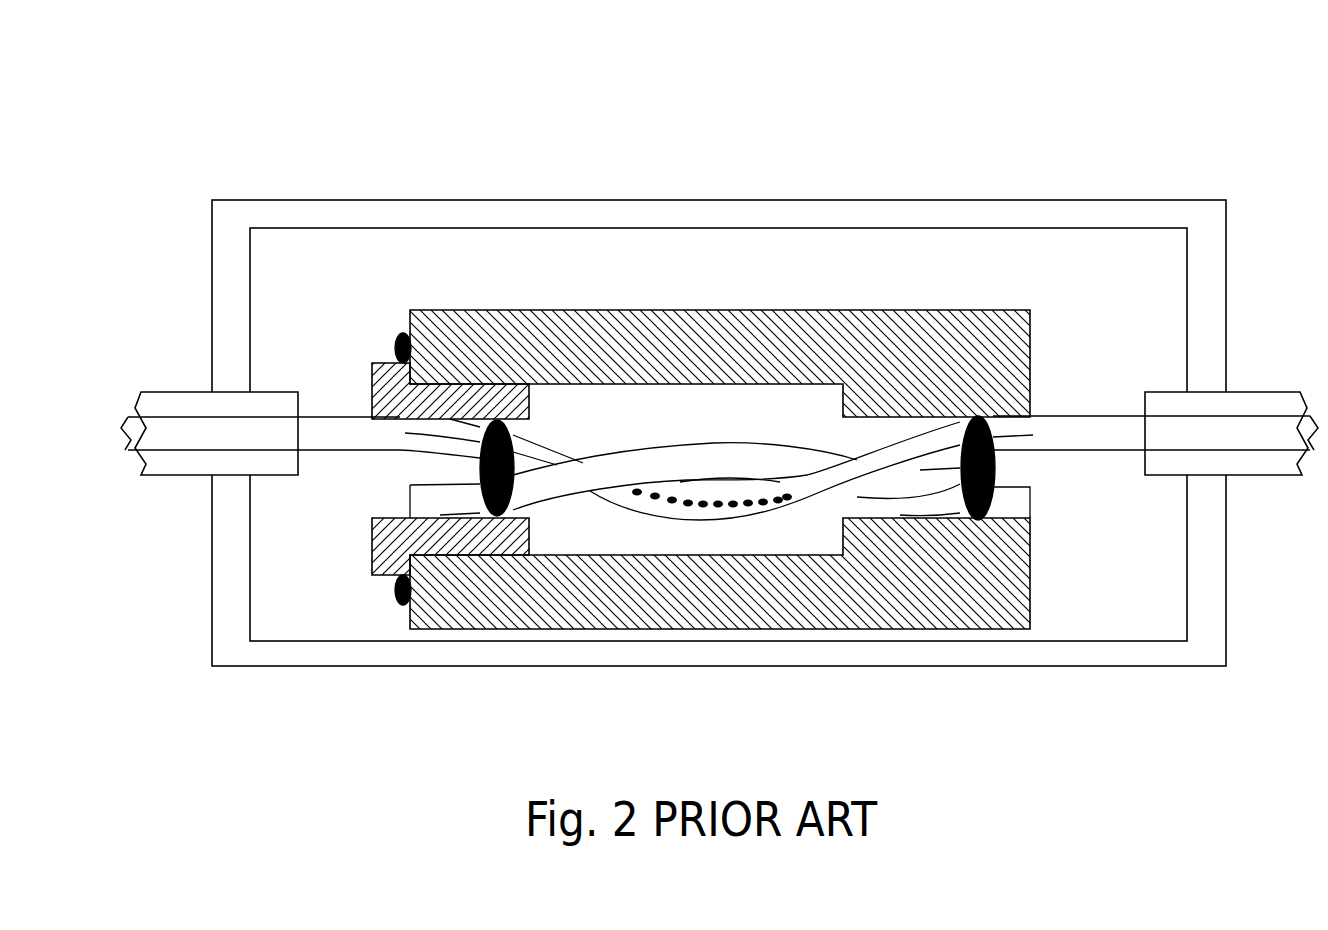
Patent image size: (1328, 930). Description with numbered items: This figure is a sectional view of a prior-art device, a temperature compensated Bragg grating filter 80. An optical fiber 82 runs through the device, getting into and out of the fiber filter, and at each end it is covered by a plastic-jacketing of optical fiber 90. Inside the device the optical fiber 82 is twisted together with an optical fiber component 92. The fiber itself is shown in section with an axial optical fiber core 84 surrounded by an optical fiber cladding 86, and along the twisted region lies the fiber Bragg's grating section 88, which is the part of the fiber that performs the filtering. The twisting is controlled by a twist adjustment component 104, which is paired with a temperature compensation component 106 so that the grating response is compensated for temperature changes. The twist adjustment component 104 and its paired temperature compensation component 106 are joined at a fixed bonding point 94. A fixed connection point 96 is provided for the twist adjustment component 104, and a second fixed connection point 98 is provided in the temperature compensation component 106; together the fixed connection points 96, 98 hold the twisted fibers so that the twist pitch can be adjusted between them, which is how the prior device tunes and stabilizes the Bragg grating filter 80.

The temperature compensated Bragg grating filter 80 is at (348, 157).
The optical fiber 82 is at (190, 448).
The axial optical fiber core 84 is at (808, 493).
The optical fiber cladding 86 is at (630, 513).
The fiber Bragg's grating section 88 is at (711, 505).
The plastic-jacketing of optical fiber 90 is at (172, 391).
The optical fiber component 92 is at (442, 517).
The fixed bonding point 94 is at (400, 334).
The fixed connection point 96 is at (480, 463).
The fixed connection point 98 is at (993, 468).
The twist adjustment component 104 is at (371, 380).
The temperature compensation component 106 is at (512, 309).